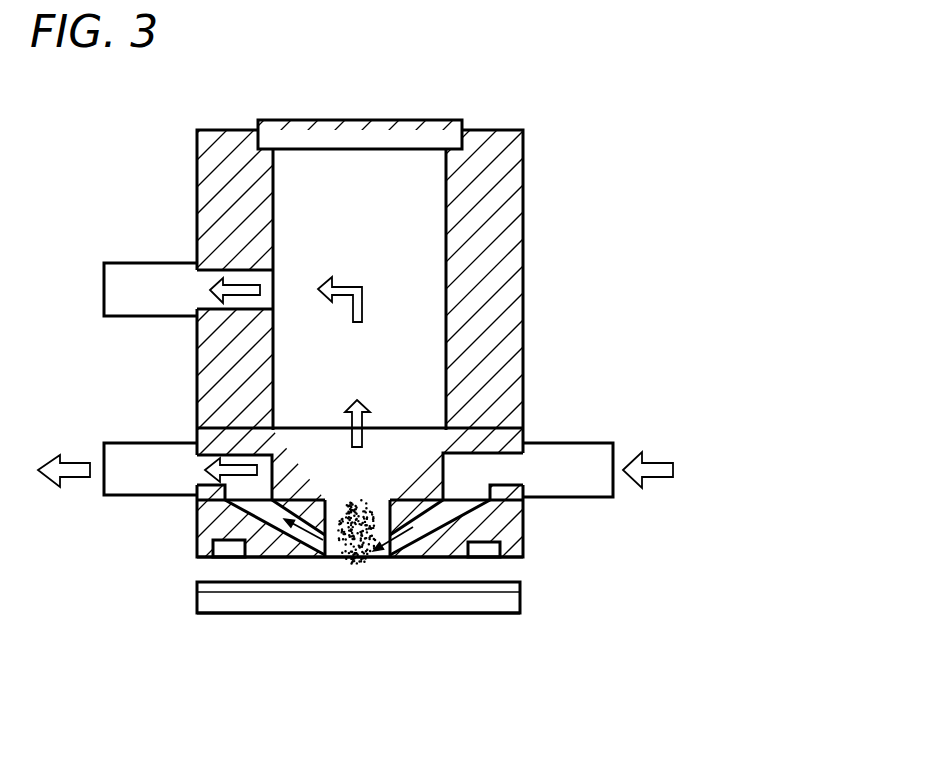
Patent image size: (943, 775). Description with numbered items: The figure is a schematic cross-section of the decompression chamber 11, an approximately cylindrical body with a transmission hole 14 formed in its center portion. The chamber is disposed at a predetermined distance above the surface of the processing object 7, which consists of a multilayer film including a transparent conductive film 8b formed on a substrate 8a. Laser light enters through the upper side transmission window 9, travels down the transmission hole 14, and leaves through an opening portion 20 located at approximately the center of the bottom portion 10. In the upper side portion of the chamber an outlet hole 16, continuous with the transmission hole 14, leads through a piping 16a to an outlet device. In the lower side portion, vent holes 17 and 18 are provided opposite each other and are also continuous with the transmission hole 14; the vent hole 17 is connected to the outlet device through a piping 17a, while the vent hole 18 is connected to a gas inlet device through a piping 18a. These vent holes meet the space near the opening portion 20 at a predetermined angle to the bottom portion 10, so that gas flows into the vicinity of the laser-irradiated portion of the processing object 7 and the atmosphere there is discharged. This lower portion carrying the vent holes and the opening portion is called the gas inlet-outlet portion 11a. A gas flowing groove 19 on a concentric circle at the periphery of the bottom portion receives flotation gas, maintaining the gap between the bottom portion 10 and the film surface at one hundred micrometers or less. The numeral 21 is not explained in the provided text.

The processing object 7 is at (420, 599).
The substrate 8a is at (512, 602).
The transparent conductive film 8b is at (510, 587).
The transmission window 9 is at (412, 132).
The bottom portion 10 is at (265, 560).
The decompression chamber 11 is at (492, 288).
The gas inlet-outlet portion 11a is at (690, 443).
The transmission hole 14 is at (417, 213).
The outlet hole 16 is at (207, 300).
The piping 16a is at (120, 262).
The vent hole 17 is at (205, 477).
The piping 17a is at (125, 443).
The vent hole 18 is at (512, 463).
The piping 18a is at (545, 443).
The gas flowing groove 19 is at (225, 548).
The opening portion 20 is at (362, 560).
The nozzle outlet 21 is at (345, 560).